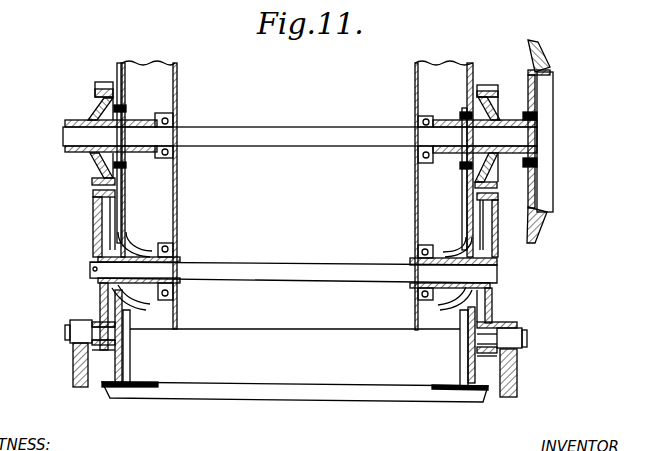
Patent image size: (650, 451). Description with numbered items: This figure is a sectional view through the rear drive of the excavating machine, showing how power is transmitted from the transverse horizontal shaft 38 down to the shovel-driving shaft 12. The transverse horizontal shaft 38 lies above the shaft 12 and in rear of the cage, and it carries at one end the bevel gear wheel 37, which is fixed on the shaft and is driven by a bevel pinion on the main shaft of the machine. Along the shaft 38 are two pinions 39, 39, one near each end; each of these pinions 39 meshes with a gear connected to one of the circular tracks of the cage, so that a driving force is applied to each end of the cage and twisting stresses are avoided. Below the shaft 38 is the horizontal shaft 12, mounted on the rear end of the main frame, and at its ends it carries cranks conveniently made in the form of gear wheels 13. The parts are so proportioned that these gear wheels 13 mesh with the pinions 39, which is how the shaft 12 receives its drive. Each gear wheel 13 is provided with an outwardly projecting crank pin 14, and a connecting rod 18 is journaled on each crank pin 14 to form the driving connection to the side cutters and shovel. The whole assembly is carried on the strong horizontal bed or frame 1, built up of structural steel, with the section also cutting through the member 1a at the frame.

The bed or frame 1 is at (137, 393).
The cylinder 1a is at (163, 77).
The horizontal shaft 12 is at (290, 262).
The gear wheels 13 is at (103, 220).
The crank pins 14 is at (77, 330).
The connecting rods 18 is at (72, 365).
The bevel gear wheel 37 is at (538, 53).
The transverse horizontal shaft 38 is at (298, 137).
The pinions 39 is at (100, 83).